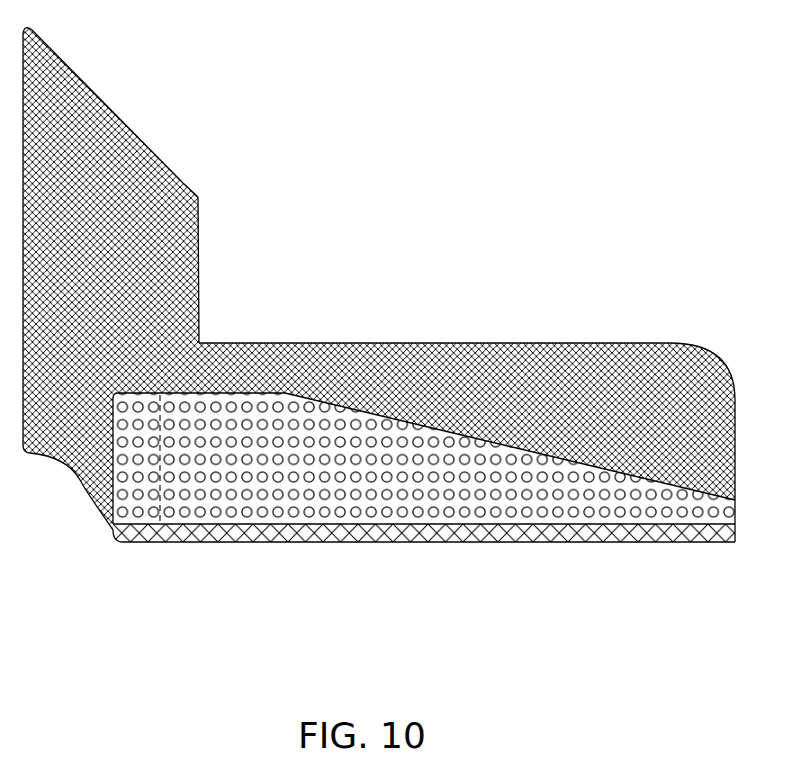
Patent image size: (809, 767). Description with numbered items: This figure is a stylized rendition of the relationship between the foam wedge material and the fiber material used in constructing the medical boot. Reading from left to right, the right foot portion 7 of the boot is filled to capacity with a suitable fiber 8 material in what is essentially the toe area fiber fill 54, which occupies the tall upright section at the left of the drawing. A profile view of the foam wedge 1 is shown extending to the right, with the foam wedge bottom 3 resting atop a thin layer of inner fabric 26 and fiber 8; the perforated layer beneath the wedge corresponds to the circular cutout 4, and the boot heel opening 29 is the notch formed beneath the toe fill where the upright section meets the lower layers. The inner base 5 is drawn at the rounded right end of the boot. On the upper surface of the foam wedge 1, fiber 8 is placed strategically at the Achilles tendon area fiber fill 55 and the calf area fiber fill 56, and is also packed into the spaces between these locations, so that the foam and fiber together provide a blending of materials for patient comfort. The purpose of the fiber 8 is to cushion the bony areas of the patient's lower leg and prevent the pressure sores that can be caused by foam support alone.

The foam wedge 1 is at (688, 497).
The foam wedge bottom 3 is at (400, 524).
The circular cutout 4 is at (130, 503).
The inner base 5 is at (707, 355).
The right foot portion 7 is at (117, 117).
The fiber 8 is at (175, 260).
The inner fabric 26 is at (541, 342).
The boot heel opening 29 is at (80, 476).
The toe area fiber fill 54 is at (62, 111).
The Achilles tendon area fiber fill 55 is at (338, 392).
The calf area fiber fill 56 is at (681, 420).